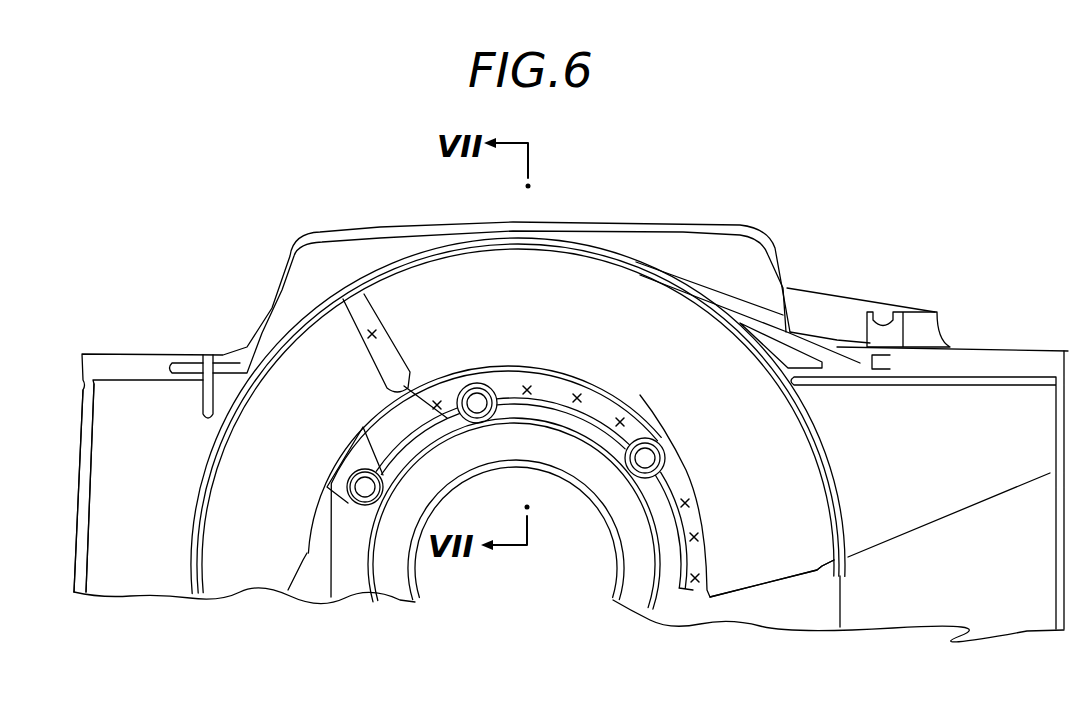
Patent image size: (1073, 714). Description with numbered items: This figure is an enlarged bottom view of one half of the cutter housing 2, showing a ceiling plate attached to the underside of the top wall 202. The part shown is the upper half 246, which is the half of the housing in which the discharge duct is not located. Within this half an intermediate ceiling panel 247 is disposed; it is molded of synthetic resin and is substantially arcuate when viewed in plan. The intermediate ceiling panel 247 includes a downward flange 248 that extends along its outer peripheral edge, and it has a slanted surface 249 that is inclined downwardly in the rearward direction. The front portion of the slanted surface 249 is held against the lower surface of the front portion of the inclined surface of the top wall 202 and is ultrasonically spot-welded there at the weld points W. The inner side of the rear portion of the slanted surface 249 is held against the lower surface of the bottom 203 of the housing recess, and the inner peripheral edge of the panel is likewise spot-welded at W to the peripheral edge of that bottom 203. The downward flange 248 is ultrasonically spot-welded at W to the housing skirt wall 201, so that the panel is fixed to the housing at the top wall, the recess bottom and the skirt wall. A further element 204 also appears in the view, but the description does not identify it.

The cutter housing 2 is at (243, 321).
The housing skirt wall 201 is at (204, 470).
The top wall 202 is at (261, 582).
The bottom of the recess 203 is at (433, 483).
The bearing bore 204 is at (586, 503).
The upper half 246 is at (295, 457).
The intermediate ceiling panel 247 is at (783, 560).
The downward flange 248 is at (621, 266).
The slanted surface 249 is at (411, 352).
The ultrasonic spot welds W is at (601, 380).